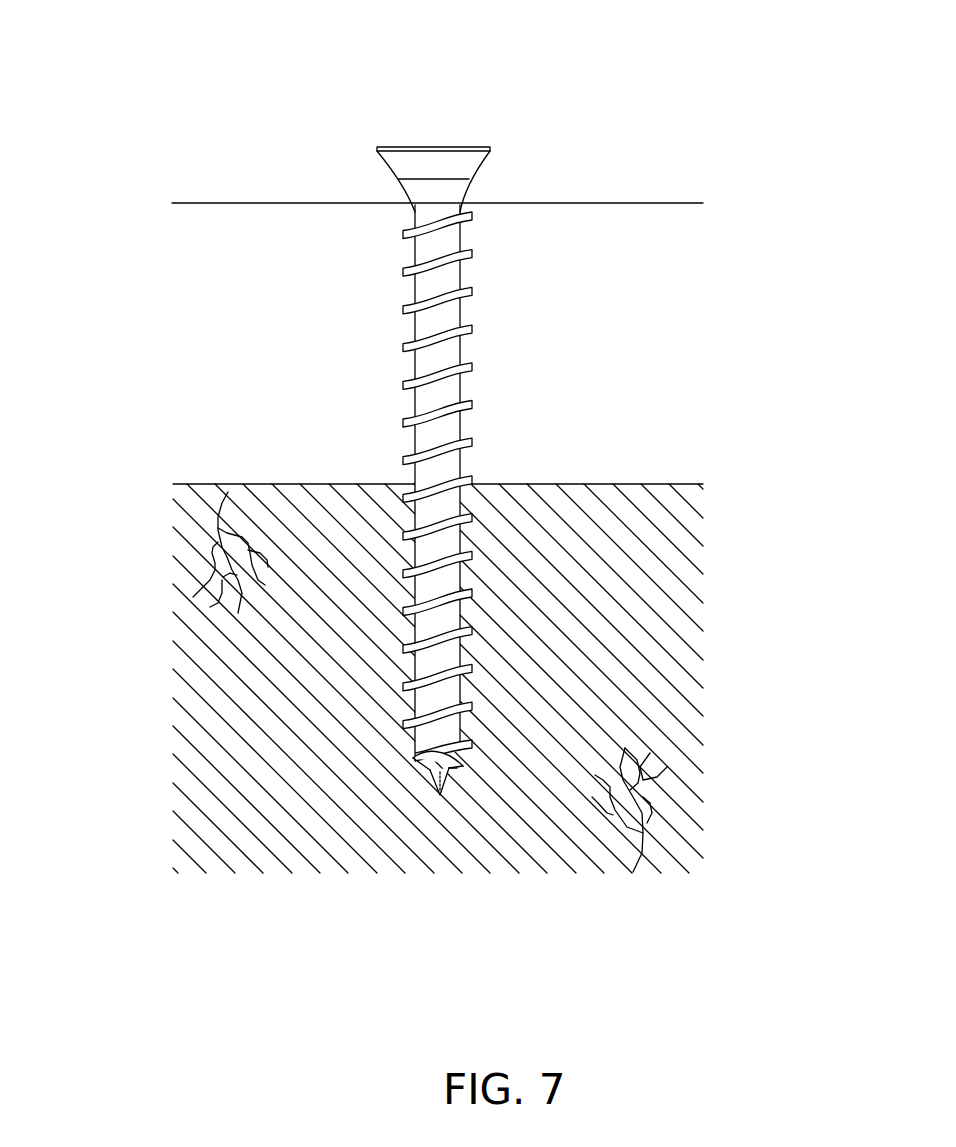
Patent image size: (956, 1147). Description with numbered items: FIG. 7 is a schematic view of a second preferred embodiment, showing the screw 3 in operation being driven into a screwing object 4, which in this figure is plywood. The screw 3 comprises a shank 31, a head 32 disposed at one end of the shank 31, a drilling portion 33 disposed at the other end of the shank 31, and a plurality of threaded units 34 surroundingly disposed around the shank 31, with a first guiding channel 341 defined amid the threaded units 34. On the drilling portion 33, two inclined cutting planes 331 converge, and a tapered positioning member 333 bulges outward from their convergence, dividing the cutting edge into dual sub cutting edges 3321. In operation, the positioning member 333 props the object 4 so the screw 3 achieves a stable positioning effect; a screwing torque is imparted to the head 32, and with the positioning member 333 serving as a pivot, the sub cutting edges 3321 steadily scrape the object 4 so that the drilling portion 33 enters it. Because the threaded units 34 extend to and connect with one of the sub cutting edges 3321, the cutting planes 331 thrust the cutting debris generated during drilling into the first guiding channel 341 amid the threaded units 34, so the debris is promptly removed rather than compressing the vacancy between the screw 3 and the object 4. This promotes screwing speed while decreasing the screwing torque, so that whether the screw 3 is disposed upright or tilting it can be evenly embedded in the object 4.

The screw 3 is at (438, 478).
The object 4 is at (663, 203).
The shank 31 is at (407, 402).
The head 32 is at (487, 146).
The drilling portion 33 is at (380, 771).
The threaded units 34 is at (465, 405).
The first guiding channel 341 is at (470, 733).
The cutting planes 331 is at (423, 773).
The tapered positioning member 333 is at (440, 795).
The sub cutting edges 3321 is at (457, 768).